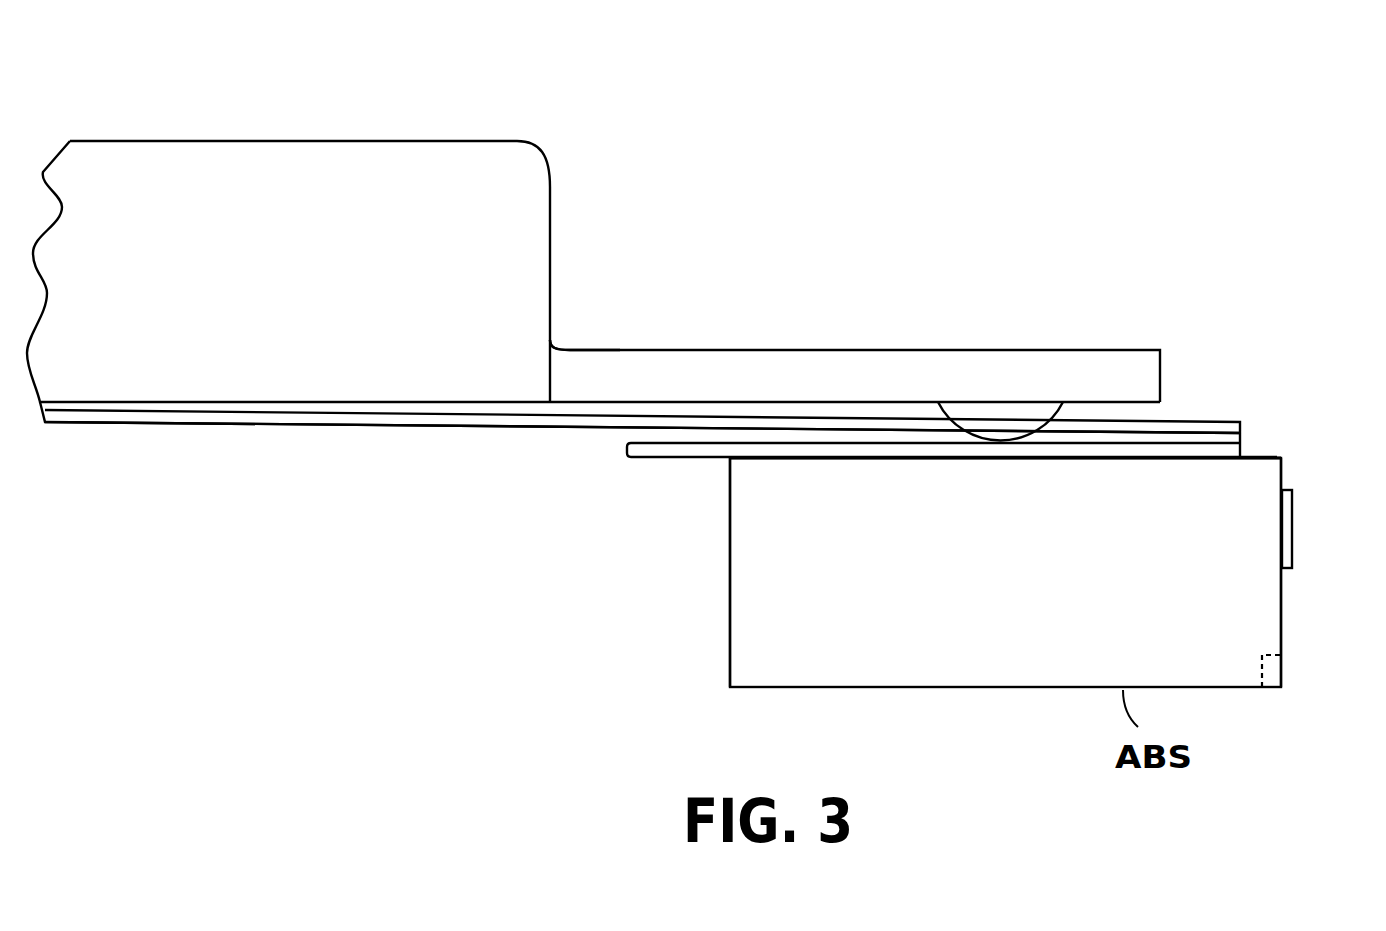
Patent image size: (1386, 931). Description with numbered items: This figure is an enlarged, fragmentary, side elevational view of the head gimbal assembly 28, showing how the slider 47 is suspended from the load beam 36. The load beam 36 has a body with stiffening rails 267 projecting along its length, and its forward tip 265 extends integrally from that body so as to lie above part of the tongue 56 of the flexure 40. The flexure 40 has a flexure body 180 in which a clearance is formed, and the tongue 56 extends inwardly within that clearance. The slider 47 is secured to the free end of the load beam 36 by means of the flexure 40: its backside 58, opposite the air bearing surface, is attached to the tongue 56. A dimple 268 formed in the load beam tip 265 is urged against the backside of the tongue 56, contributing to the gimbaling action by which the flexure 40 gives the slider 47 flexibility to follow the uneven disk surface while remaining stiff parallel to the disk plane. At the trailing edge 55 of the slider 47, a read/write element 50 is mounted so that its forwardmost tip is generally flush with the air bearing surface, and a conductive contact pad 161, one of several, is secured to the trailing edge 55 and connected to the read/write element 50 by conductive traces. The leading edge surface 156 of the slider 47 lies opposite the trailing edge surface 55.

The head gimbal assembly 28 is at (798, 56).
The stiffening rail 267 is at (313, 289).
The load beam 36 is at (598, 351).
The load beam tip 265 is at (911, 392).
The backside of the slider 58 is at (1272, 455).
The flexure 40 is at (396, 427).
The flexure body 180 is at (502, 426).
The tongue 56 is at (653, 450).
The dimple 268 is at (1043, 405).
The slider 47 is at (990, 606).
The trailing edge 55 is at (1285, 476).
The conductive contact pad 161 is at (1293, 543).
The read/write element 50 is at (1283, 679).
The leading edge surface 156 is at (729, 661).